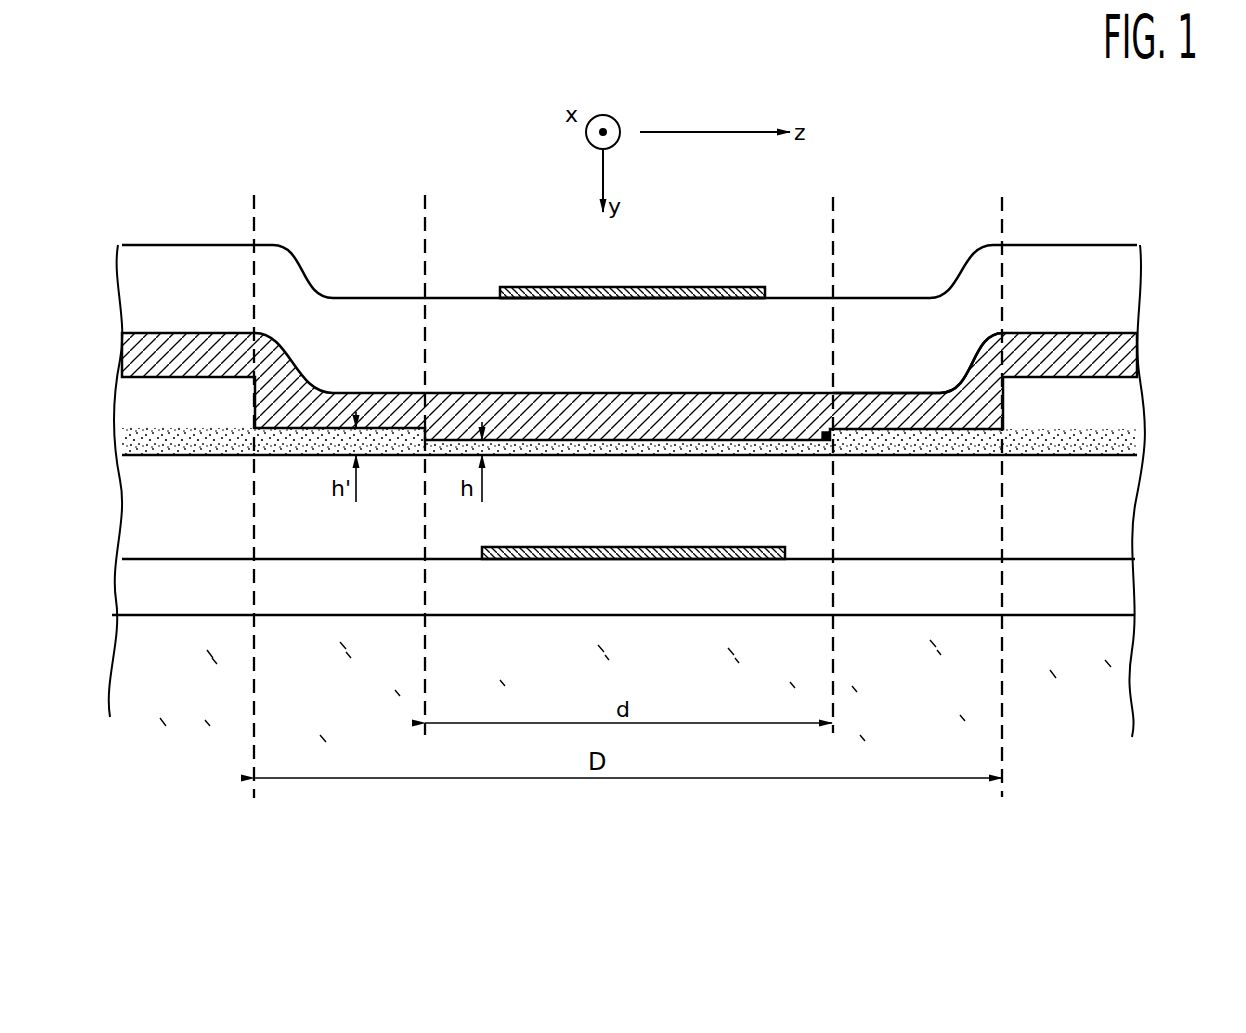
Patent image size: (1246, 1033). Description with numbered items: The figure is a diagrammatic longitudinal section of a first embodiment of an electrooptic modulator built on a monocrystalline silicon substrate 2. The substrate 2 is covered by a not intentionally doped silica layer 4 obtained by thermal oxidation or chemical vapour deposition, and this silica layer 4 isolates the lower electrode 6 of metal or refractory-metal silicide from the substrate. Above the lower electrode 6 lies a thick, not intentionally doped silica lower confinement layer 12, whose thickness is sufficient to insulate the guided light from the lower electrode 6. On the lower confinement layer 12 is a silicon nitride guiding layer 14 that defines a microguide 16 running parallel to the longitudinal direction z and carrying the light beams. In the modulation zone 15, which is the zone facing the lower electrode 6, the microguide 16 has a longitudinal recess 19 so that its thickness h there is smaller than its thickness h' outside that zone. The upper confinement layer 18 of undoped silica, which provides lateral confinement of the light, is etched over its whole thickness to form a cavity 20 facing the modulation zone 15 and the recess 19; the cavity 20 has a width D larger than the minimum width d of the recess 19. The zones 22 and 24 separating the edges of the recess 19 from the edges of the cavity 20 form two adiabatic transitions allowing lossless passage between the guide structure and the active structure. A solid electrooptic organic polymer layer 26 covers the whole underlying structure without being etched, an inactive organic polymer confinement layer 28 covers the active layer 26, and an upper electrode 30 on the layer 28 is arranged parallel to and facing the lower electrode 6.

The monocrystalline silicon substrate 2 is at (1093, 692).
The silica layer 4 is at (1110, 590).
The lower electrode 6 is at (635, 548).
The lower confinement layer 12 is at (1112, 511).
The guiding layer 14 is at (1147, 441).
The modulation zone 15 is at (628, 278).
The microguide 16 is at (863, 425).
The upper confinement layer 18 is at (1110, 395).
The longitudinal recess 19 is at (828, 442).
The cavity 20 is at (985, 402).
The adiabatic transition zone 22 is at (425, 195).
The adiabatic transition zone 24 is at (1002, 197).
The organic polymer layer 26 is at (640, 416).
The confinement layer 28 is at (460, 337).
The upper electrode 30 is at (753, 286).